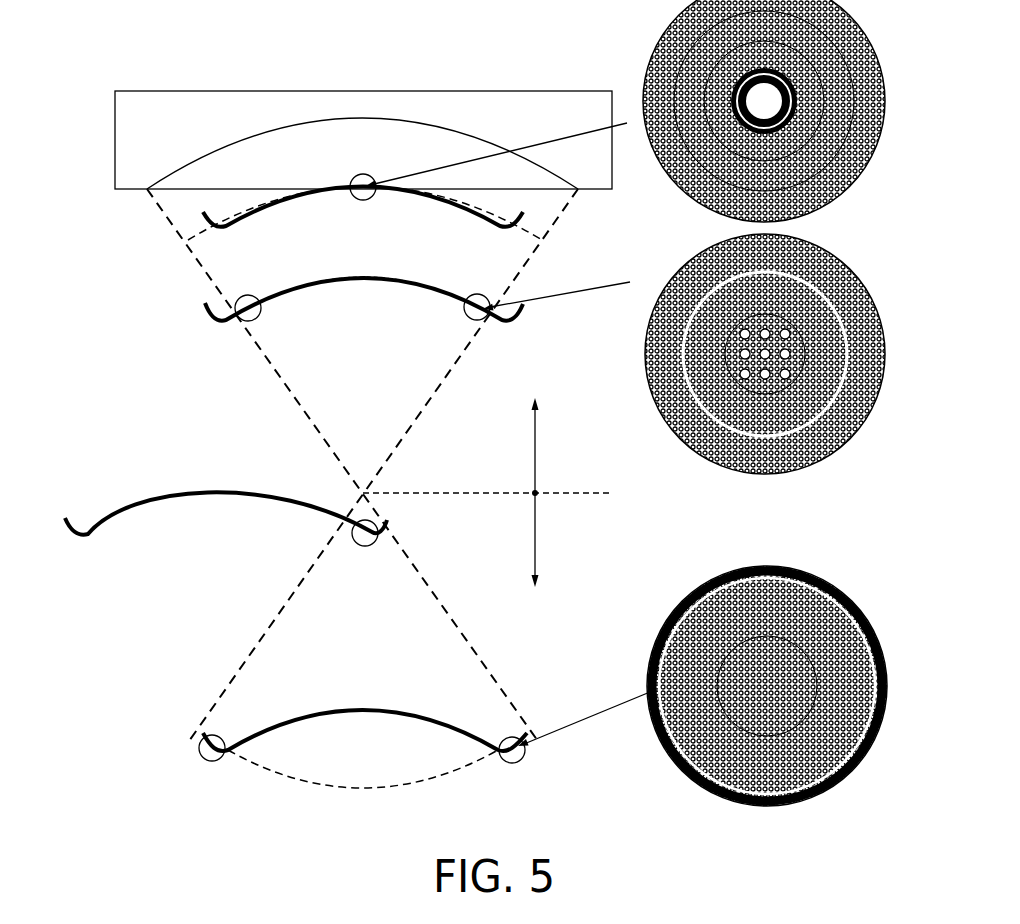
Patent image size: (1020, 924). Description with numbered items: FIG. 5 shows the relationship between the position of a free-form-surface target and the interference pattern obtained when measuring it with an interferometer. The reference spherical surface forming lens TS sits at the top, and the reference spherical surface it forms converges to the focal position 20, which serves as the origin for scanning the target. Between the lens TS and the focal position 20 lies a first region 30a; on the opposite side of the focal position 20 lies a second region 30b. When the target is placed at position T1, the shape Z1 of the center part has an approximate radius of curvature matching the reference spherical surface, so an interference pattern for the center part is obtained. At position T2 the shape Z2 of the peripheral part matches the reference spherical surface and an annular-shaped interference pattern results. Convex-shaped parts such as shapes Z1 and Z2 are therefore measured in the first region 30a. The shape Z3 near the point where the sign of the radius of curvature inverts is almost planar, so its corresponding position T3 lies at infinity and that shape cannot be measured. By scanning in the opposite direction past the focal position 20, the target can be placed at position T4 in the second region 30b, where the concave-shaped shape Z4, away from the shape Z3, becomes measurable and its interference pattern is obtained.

The reference spherical surface forming lens TS is at (567, 110).
The focal position 20 is at (363, 493).
The first region 30a is at (487, 447).
The second region 30b is at (556, 540).
The position T1 is at (225, 228).
The position T2 is at (221, 321).
The position T3 is at (138, 510).
The position T4 is at (253, 730).
The shape of the center part Z1 is at (367, 174).
The shape of the peripheral part Z2 is at (483, 318).
The shape in the vicinity of the position where the sign of the radius of curvature Z3 is at (357, 542).
The shape away from the shape where the sign of the radius of curvature is inverted Z4 is at (510, 733).